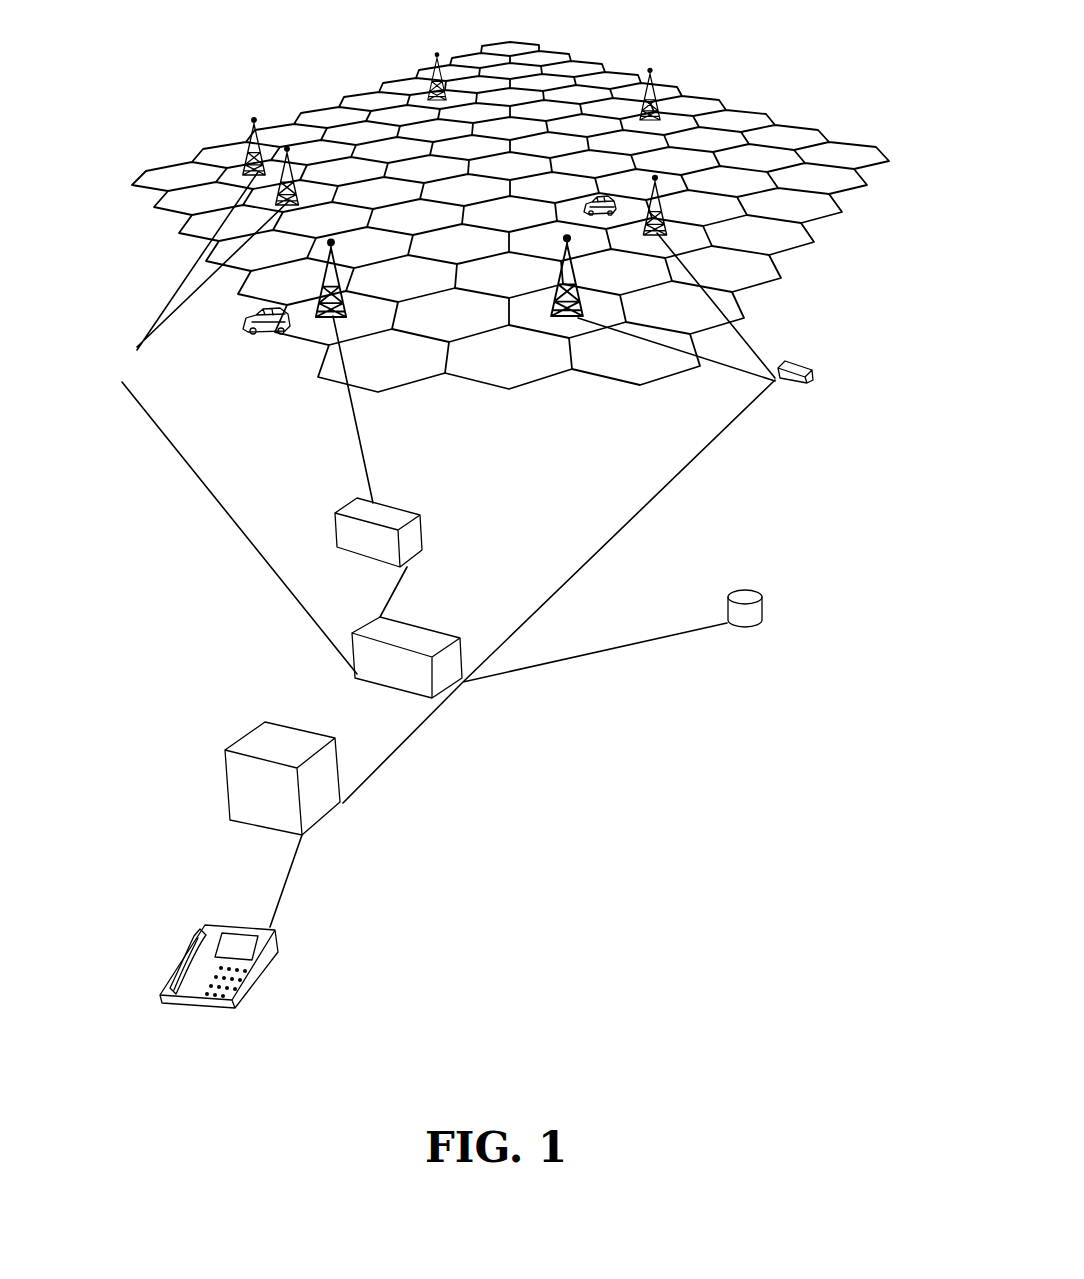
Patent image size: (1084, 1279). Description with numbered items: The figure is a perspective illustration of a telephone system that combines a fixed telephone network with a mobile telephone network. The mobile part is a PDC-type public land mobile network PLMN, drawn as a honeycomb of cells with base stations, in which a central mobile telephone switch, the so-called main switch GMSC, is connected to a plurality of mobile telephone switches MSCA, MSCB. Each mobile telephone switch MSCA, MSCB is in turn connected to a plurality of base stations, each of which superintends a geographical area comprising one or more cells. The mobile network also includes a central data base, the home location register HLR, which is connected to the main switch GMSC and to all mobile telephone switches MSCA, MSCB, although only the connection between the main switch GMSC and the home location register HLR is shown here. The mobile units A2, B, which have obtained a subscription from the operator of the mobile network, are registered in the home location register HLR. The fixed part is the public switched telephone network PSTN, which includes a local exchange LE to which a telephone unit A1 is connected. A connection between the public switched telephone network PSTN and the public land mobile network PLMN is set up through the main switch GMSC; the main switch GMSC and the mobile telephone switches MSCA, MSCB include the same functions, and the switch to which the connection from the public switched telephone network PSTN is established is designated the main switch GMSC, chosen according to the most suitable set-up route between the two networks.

The public land mobile network PLMN is at (165, 111).
The mobile unit A2 is at (600, 197).
The mobile unit B is at (253, 333).
The mobile telephone switch MSCA is at (803, 362).
The mobile telephone switch MSCB is at (397, 507).
The home location register HLR is at (742, 585).
The main switch GMSC is at (405, 624).
The local exchange LE is at (278, 747).
The telephone unit A1 is at (235, 925).
The public switched telephone network PSTN is at (446, 891).